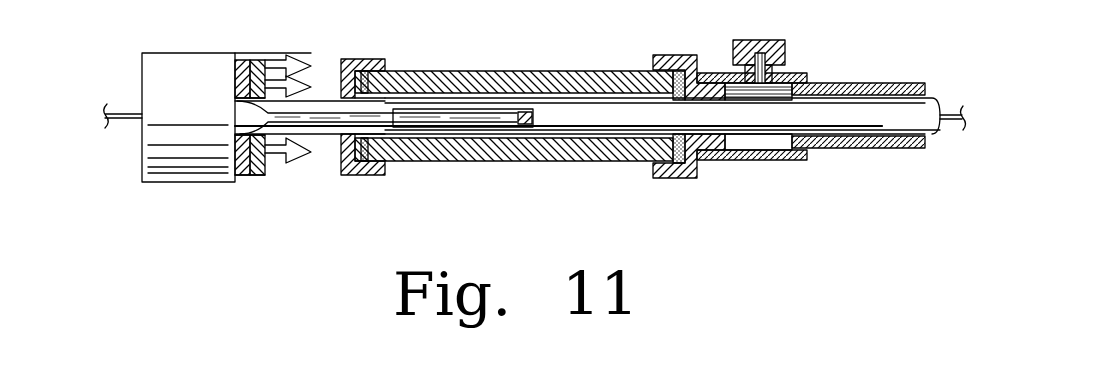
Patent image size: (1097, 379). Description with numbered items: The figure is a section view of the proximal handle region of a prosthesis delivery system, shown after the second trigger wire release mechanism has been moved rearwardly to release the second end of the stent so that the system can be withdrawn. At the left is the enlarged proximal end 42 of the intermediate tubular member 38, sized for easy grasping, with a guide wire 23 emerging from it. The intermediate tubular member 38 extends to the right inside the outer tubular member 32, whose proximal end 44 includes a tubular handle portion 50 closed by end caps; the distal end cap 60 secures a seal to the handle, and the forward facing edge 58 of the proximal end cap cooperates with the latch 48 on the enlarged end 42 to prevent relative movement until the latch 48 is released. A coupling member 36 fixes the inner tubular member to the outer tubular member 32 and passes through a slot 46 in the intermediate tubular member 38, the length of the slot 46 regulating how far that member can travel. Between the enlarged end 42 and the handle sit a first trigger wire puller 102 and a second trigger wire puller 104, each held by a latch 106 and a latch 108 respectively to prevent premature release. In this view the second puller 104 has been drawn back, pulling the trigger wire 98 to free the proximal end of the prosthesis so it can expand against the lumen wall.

The guide wire 23 is at (122, 118).
The outer tubular member 32 is at (848, 148).
The coupling member 36 is at (530, 125).
The intermediate tubular member 38 is at (590, 100).
The proximal end of intermediate tubular member 42 is at (185, 57).
The proximal end of outer tubular member 44 is at (362, 64).
The slot 46 is at (418, 110).
The latch 48 is at (263, 58).
The tubular handle portion 50 is at (537, 73).
The forward facing edge 58 is at (385, 170).
The distal end cap 60 is at (670, 178).
The trigger wire 98 is at (320, 124).
The first trigger wire puller 102 is at (242, 177).
The second trigger wire puller 104 is at (259, 176).
The latch 106 is at (310, 70).
The latch 108 is at (293, 158).